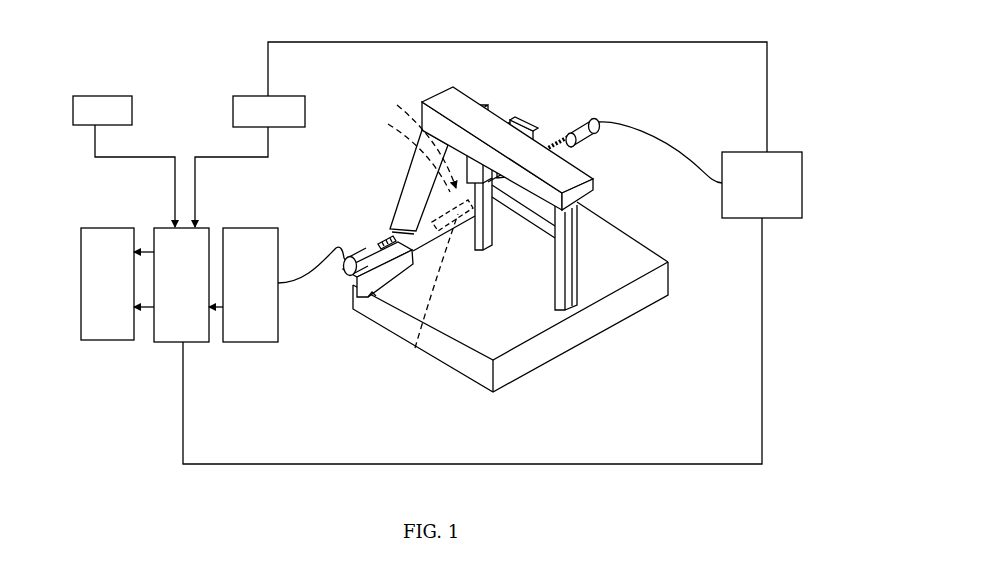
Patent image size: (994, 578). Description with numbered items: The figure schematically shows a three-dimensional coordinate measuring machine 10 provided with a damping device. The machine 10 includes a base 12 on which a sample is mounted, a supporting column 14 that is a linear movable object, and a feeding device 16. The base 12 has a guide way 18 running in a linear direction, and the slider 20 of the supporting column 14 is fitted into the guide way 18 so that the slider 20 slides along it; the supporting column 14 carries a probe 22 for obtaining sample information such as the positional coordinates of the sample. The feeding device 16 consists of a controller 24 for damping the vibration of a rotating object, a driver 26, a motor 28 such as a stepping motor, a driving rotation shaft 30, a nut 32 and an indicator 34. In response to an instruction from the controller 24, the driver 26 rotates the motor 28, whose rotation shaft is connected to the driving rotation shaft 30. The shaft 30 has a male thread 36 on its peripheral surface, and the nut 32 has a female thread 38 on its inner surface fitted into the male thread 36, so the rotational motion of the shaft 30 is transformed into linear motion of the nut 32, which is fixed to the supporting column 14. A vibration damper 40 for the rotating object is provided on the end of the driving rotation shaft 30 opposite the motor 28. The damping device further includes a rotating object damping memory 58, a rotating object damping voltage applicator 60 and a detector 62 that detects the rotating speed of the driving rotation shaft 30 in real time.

The three-dimensional coordinate measuring machine 10 is at (806, 90).
The base 12 is at (528, 323).
The supporting column 14 is at (437, 183).
The feeding device 16 is at (388, 228).
The guide way 18 is at (372, 298).
The slider 20 is at (414, 261).
The probe 22 is at (466, 262).
The controller 24 is at (190, 342).
The driver 26 is at (781, 152).
The motor 28 is at (578, 121).
The driving rotation shaft 30 is at (376, 243).
The nut 32 is at (408, 149).
The indicator 34 is at (104, 96).
The male thread 36 is at (427, 293).
The female thread 38 is at (423, 158).
The vibration damper 40 is at (350, 256).
The rotating object damping memory 58 is at (100, 340).
The rotating object damping voltage applicator 60 is at (244, 342).
The detector 62 is at (283, 96).